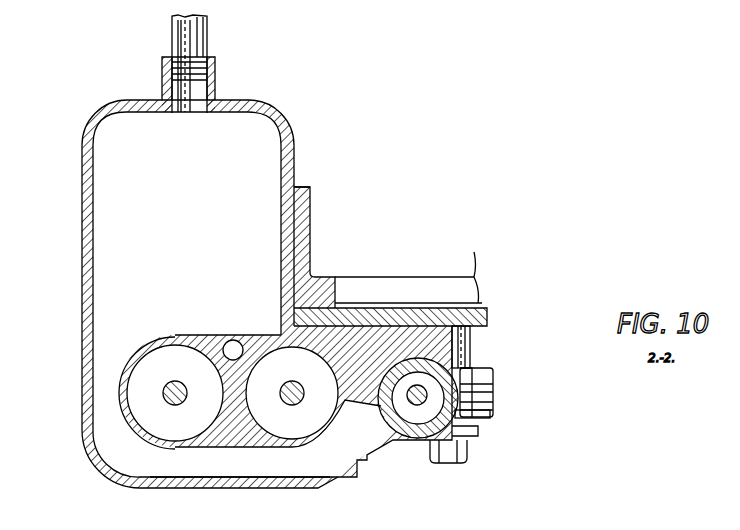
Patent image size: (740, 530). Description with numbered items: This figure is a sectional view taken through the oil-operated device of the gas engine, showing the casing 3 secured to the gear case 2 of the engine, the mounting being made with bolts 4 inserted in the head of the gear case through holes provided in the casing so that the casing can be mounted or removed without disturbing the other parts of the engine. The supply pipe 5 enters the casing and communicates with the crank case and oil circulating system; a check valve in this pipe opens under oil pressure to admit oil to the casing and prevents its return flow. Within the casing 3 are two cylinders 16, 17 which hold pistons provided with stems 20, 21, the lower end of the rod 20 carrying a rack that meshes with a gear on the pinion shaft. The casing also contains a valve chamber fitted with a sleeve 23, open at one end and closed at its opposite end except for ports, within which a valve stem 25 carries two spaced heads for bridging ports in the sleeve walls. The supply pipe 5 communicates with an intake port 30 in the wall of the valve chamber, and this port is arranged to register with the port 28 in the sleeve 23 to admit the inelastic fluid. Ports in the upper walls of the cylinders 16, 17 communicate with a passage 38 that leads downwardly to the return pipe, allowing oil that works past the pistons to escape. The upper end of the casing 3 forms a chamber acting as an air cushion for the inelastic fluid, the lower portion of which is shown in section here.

The gear case 2 is at (388, 200).
The casing 3 is at (88, 274).
The bolts 4 is at (452, 453).
The supply pipe 5 is at (177, 43).
The cylinder 16 is at (277, 387).
The cylinder 17 is at (153, 368).
The stem 20 is at (167, 388).
The stem 21 is at (233, 350).
The sleeve 23 is at (462, 373).
The valve stem 25 is at (482, 396).
The port 28 is at (474, 420).
The intake port 30 is at (175, 465).
The passage 38 is at (187, 333).